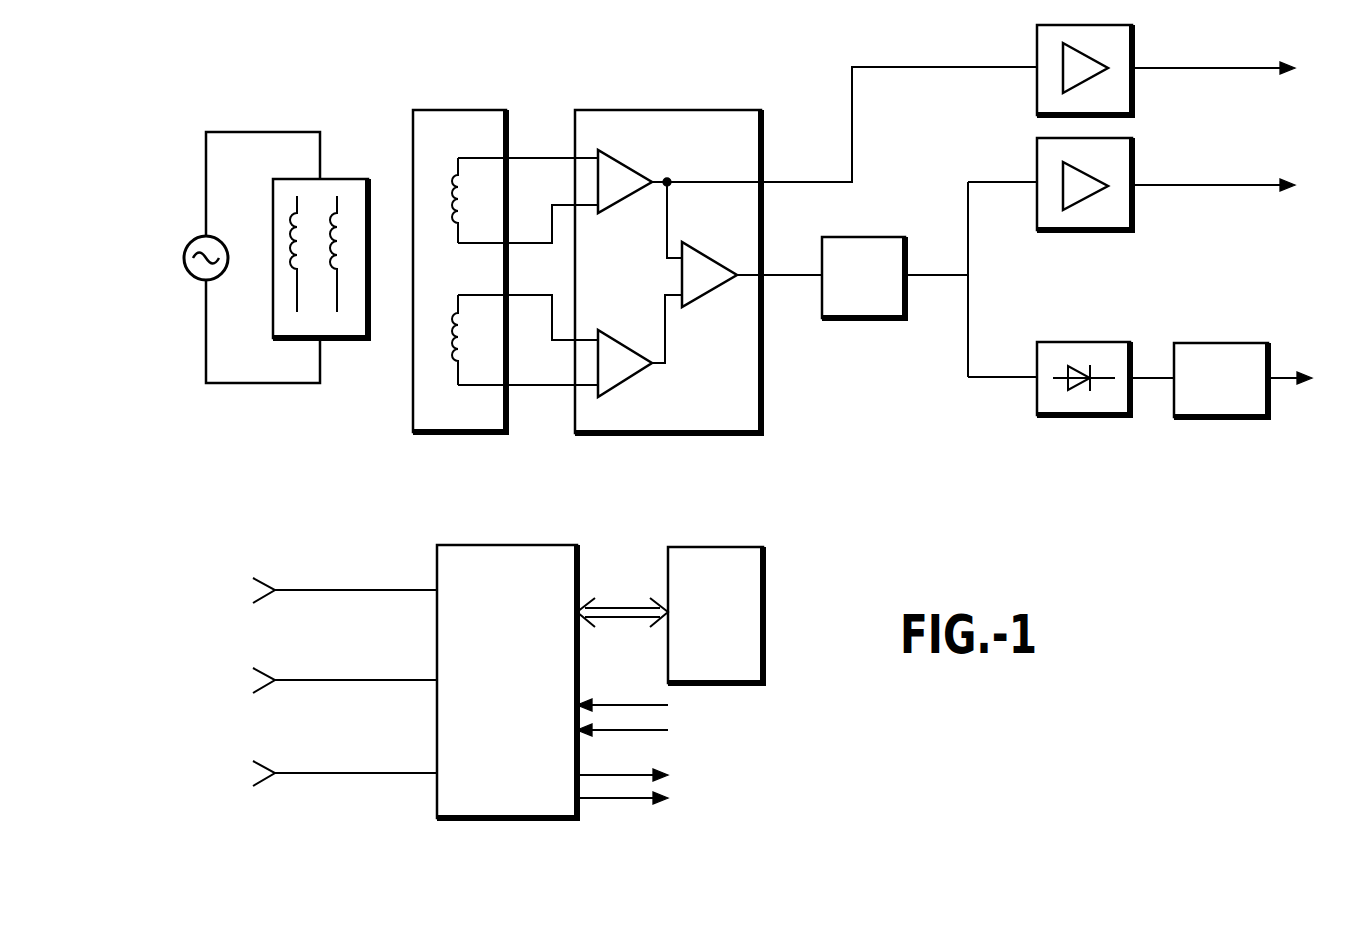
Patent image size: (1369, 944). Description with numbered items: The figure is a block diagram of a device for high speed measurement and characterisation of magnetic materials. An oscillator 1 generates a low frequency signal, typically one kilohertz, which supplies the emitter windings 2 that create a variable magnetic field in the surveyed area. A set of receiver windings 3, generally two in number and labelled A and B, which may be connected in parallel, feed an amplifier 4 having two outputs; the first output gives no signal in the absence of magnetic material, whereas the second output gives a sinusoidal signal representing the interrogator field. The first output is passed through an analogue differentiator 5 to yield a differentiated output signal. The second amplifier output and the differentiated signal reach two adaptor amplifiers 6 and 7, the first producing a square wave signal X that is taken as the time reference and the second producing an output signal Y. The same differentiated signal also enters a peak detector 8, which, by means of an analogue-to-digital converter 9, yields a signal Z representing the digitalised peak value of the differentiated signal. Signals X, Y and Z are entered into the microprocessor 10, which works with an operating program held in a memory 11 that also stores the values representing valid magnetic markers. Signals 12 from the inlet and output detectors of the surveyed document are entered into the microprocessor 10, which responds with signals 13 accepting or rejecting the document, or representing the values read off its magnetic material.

The oscillator 1 is at (190, 276).
The emitter windings 2 is at (345, 330).
The set of receiver windings 3 is at (440, 418).
The amplifier 4 is at (717, 418).
The analogue differentiator 5 is at (872, 307).
The adaptor amplifier 6 is at (1047, 92).
The adaptor amplifier 7 is at (1113, 221).
The peak detector 8 is at (1092, 402).
The analogue-to-digital converter 9 is at (1233, 403).
The microprocessor 10 is at (532, 798).
The memory 11 is at (733, 567).
The signals from inlet and output detectors 12 is at (654, 719).
The acceptance or rejection signals 13 is at (654, 785).